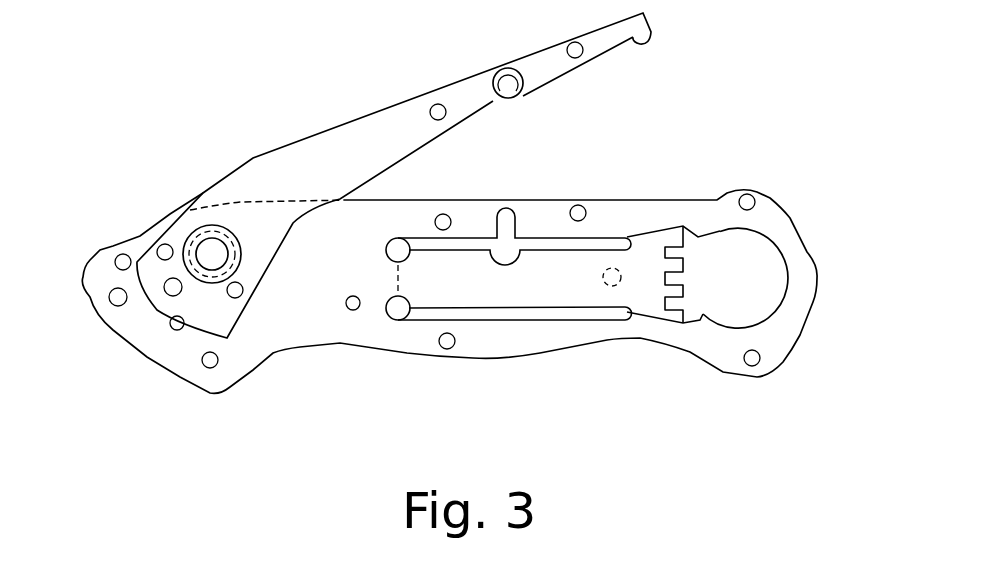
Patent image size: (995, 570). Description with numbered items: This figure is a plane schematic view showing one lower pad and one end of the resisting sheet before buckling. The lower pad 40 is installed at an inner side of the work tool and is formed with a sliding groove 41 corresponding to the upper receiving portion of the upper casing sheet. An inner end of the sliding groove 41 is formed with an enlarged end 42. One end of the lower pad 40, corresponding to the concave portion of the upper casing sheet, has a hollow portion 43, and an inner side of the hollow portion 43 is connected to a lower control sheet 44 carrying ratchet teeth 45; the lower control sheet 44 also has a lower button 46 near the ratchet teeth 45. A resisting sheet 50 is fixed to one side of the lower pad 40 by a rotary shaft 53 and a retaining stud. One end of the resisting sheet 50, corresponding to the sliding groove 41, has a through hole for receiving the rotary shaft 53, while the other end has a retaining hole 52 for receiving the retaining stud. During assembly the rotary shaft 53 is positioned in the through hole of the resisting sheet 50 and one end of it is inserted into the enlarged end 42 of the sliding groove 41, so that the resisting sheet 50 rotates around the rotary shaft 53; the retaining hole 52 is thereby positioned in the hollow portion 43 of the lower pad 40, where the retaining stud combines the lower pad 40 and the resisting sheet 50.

The lower pad 40 is at (405, 343).
The sliding groove 41 is at (140, 258).
The enlarged end 42 is at (213, 236).
The hollow portion 43 is at (753, 250).
The lower control sheet 44 is at (540, 260).
The ratchet teeth 45 is at (682, 258).
The lower button 46 is at (613, 313).
The resisting sheet 50 is at (413, 105).
The retaining hole 52 is at (510, 90).
The rotary shaft 53 is at (200, 232).